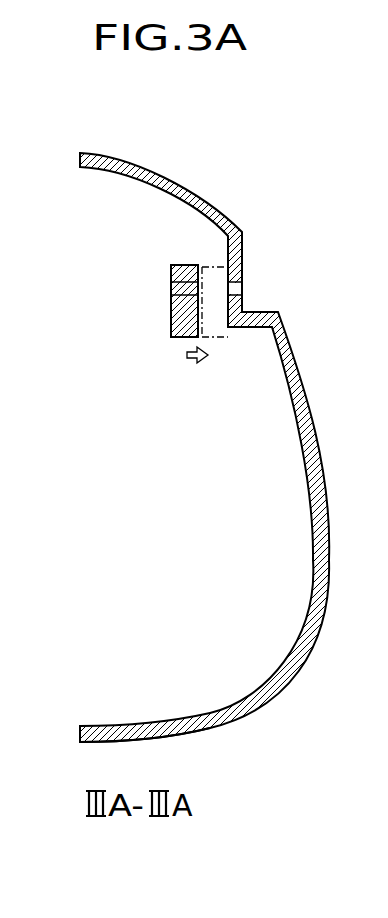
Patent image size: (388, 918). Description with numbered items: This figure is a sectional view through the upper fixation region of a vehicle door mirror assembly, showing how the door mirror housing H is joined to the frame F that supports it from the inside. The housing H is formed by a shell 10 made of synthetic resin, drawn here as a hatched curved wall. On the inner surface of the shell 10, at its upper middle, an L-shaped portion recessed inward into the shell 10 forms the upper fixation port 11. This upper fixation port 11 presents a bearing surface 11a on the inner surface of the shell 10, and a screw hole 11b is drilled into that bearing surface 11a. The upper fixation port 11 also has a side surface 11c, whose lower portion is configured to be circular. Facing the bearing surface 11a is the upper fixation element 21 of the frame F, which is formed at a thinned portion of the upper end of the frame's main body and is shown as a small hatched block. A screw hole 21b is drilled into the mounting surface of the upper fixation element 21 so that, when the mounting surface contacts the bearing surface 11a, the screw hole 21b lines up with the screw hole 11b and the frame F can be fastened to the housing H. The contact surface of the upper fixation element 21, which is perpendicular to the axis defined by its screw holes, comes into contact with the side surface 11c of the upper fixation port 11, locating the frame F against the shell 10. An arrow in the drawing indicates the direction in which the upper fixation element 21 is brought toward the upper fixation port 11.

The shell 10 is at (230, 190).
The upper fixation port 11 is at (226, 271).
The bearing surface 11a is at (228, 315).
The screw hole 11b is at (242, 292).
The side surface 11c is at (247, 327).
The upper fixation element 21 is at (170, 318).
The screw hole 21b is at (172, 290).
The frame F is at (170, 350).
The door mirror housing H is at (232, 758).